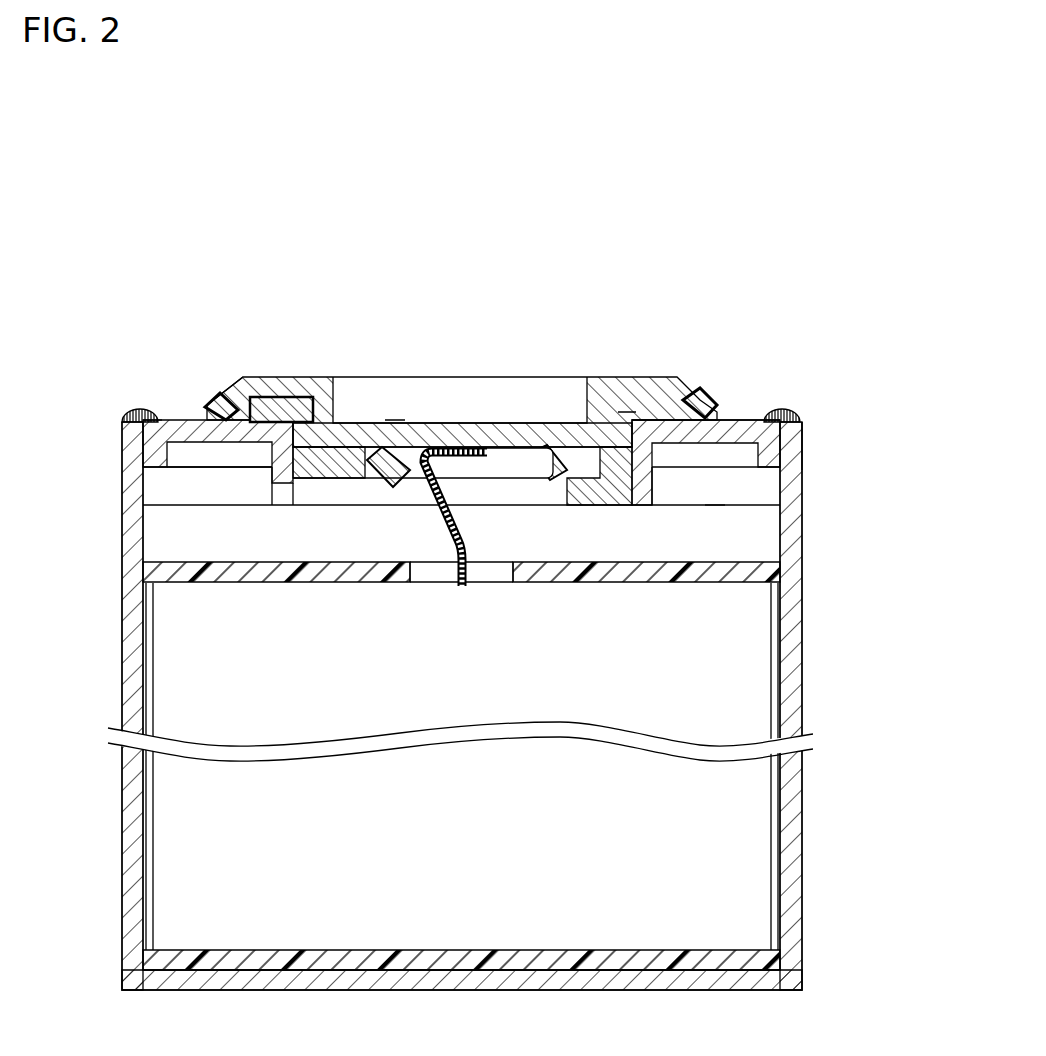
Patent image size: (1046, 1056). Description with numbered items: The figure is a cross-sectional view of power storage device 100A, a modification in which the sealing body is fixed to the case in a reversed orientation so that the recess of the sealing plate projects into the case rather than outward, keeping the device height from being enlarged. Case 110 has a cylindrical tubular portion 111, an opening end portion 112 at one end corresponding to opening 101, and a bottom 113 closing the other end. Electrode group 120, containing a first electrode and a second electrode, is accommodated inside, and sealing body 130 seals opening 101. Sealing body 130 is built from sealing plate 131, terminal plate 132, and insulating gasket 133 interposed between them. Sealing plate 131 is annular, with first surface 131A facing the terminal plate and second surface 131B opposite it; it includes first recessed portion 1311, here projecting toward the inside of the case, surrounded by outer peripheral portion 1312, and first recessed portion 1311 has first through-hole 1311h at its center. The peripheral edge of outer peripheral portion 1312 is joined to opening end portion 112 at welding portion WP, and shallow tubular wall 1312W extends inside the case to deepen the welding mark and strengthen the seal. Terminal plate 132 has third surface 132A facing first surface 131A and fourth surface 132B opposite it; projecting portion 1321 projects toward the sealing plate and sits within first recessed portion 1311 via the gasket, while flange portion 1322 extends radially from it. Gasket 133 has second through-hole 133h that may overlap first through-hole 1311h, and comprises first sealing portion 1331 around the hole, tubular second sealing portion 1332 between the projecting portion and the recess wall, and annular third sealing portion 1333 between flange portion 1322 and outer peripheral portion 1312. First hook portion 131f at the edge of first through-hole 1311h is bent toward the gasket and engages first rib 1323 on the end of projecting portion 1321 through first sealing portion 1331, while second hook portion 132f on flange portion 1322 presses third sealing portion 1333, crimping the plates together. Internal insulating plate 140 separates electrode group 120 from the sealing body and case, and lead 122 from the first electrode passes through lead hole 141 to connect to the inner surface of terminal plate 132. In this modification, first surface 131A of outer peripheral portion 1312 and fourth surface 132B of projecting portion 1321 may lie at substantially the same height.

The power storage device 100A is at (832, 259).
The case 110 is at (848, 455).
The tubular portion 111 is at (797, 652).
The opening end portion 112 is at (792, 456).
The bottom 113 is at (687, 983).
The electrode group 120 is at (170, 674).
The lead 122 is at (468, 536).
The sealing body 130 is at (637, 284).
The sealing plate 131 is at (180, 420).
The first recessed portion 1311 is at (295, 506).
The first through-hole 1311h is at (396, 506).
The outer peripheral portion 1312 is at (207, 433).
The shallow tubular wall 1312W is at (163, 416).
The first surface 131A is at (743, 418).
The second surface 131B is at (690, 449).
The first hook portion 131f is at (397, 420).
The terminal plate 132 is at (277, 376).
The projecting portion 1321 is at (437, 427).
The flange portion 1322 is at (292, 382).
The first rib 1323 is at (592, 495).
The third surface 132A is at (517, 444).
The fourth surface 132B is at (470, 440).
The second hook portion 132f is at (243, 400).
The gasket 133 is at (627, 376).
The first sealing portion 1331 is at (313, 493).
The second sealing portion 1332 is at (273, 447).
The third sealing portion 1333 is at (212, 468).
The second through-hole 133h is at (497, 480).
The internal insulating plate 140 is at (628, 583).
The lead hole 141 is at (435, 586).
The opening 101 is at (713, 522).
The welding portion WP is at (140, 412).